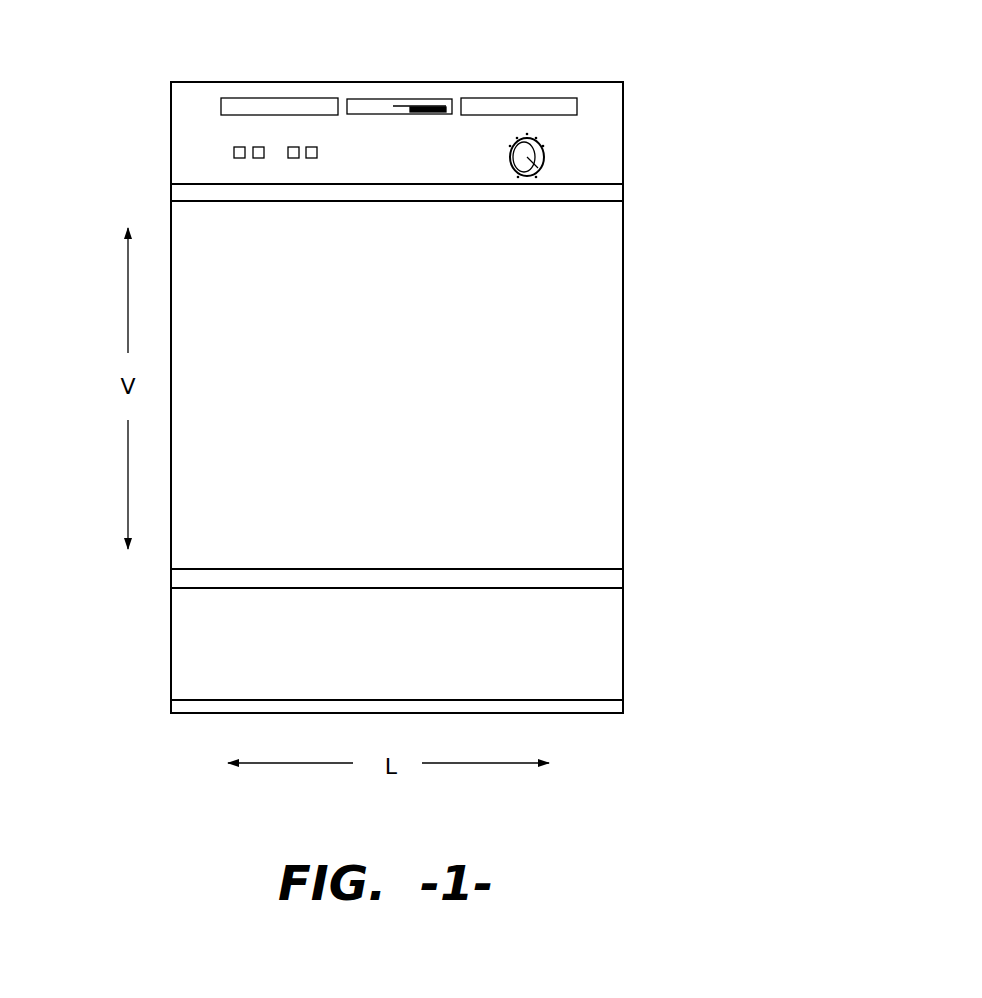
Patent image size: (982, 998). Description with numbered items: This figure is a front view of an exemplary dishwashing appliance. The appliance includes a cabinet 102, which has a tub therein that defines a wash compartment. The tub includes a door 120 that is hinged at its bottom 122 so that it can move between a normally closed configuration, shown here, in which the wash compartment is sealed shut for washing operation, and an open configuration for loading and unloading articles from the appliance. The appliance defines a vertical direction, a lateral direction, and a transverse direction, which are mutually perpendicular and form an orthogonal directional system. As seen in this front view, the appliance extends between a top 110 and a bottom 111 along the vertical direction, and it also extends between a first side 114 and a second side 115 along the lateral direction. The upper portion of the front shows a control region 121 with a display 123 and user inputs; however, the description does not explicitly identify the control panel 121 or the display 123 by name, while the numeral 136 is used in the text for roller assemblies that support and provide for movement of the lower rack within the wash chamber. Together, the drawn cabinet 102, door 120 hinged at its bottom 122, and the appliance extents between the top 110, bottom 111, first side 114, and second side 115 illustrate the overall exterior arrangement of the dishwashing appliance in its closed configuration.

The top 110 is at (156, 80).
The cabinet 102 is at (623, 658).
The bottom 111 is at (156, 710).
The first side 114 is at (172, 721).
The second side 115 is at (622, 724).
The door 120 is at (583, 370).
The control panel 121 is at (602, 115).
The bottom of door 122 is at (633, 569).
The display 123 is at (448, 108).
The roller assemblies 136 is at (300, 147).